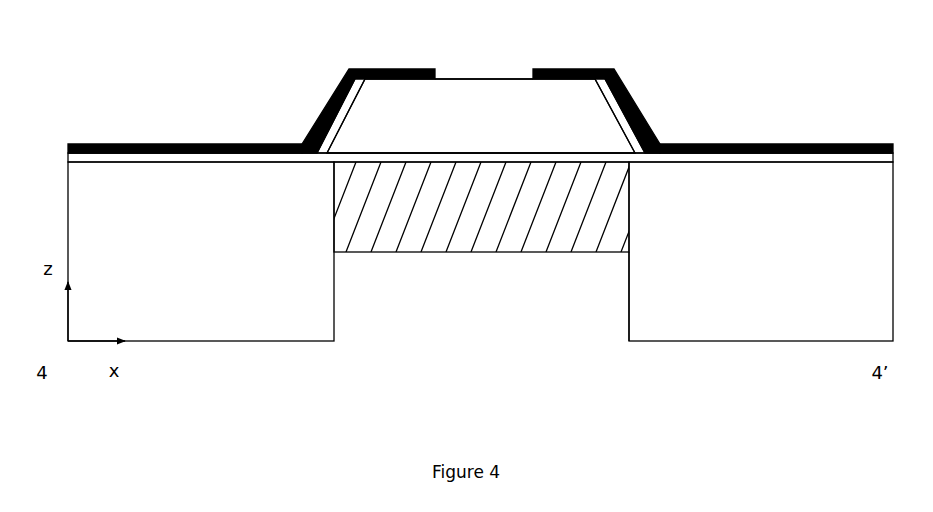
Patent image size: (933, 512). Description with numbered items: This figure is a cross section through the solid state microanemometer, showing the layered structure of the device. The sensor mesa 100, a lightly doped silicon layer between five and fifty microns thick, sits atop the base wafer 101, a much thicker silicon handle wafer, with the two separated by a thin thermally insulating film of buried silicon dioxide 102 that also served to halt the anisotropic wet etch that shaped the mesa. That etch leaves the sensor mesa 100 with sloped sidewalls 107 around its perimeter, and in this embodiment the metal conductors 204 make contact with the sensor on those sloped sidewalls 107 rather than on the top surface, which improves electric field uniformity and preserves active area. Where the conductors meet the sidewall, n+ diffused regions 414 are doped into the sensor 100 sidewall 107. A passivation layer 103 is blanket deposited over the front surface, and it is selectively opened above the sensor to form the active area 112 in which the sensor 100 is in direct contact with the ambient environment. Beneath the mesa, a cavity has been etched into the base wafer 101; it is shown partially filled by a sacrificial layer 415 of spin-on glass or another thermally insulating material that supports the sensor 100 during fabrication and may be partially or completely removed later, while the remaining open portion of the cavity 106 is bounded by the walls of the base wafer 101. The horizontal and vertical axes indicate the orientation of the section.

The sensor mesa 100 is at (423, 108).
The base wafer 101 is at (82, 210).
The buried silicon dioxide 102 is at (757, 160).
The passivation layer 103 is at (135, 142).
The cavity 106 is at (627, 295).
The sloped sidewalls 107 is at (353, 107).
The active area 112 is at (500, 78).
The metal conductors 204 is at (325, 125).
The n+ diffused regions 414 is at (623, 117).
The sacrificial layer 415 is at (418, 250).